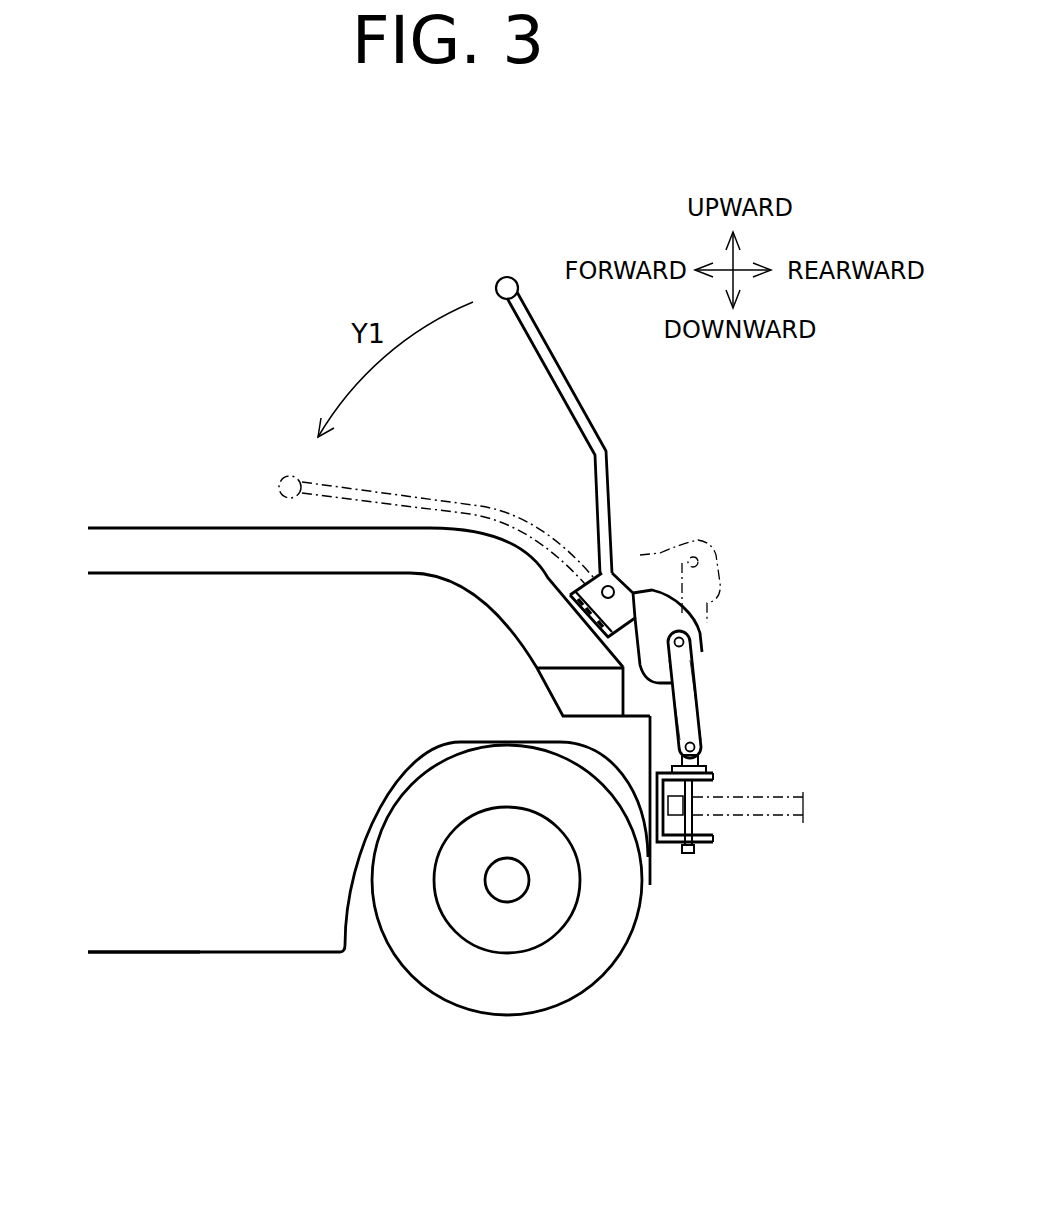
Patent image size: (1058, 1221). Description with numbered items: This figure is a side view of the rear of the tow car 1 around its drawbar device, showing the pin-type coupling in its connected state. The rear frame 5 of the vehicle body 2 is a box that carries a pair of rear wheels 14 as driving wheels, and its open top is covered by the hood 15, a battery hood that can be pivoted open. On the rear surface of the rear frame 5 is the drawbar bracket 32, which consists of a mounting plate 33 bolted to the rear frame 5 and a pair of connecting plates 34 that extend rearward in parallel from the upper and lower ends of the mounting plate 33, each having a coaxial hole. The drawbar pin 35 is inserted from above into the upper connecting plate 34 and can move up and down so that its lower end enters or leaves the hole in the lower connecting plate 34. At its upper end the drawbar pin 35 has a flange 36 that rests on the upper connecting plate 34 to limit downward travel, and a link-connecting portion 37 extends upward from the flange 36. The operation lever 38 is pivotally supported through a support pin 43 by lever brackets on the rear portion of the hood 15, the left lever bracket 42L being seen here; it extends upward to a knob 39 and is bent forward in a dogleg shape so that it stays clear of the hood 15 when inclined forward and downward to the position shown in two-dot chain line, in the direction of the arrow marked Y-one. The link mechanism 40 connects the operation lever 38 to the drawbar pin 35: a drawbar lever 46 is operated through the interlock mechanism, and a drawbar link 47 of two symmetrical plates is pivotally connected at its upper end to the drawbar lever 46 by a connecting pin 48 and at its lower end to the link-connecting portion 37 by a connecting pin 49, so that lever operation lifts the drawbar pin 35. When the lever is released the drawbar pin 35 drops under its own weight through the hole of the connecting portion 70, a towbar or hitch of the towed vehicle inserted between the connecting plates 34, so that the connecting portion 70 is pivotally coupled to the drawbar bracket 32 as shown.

The tow car 1 is at (181, 338).
The vehicle body 2 is at (118, 948).
The rear frame 5 is at (232, 932).
The rear wheel 14 is at (440, 970).
The hood 15 is at (130, 540).
The drawbar bracket 32 is at (678, 855).
The mounting plate 33 is at (638, 840).
The connecting plate 34 is at (717, 777).
The drawbar pin 35 is at (771, 802).
The flange 36 is at (705, 773).
The link-connecting portion 37 is at (693, 757).
The operation lever 38 is at (568, 378).
The knob 39 is at (511, 281).
The link mechanism 40 is at (740, 641).
The left lever bracket 42L is at (622, 583).
The support pin 43 is at (618, 578).
The drawbar lever 46 is at (712, 543).
The drawbar link 47 is at (722, 552).
The connecting pin 48 is at (700, 637).
The connecting pin 49 is at (697, 737).
The connecting portion 70 is at (770, 807).